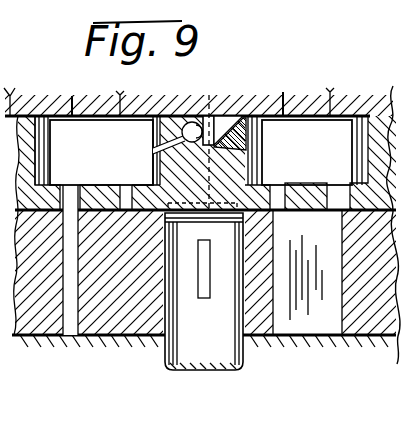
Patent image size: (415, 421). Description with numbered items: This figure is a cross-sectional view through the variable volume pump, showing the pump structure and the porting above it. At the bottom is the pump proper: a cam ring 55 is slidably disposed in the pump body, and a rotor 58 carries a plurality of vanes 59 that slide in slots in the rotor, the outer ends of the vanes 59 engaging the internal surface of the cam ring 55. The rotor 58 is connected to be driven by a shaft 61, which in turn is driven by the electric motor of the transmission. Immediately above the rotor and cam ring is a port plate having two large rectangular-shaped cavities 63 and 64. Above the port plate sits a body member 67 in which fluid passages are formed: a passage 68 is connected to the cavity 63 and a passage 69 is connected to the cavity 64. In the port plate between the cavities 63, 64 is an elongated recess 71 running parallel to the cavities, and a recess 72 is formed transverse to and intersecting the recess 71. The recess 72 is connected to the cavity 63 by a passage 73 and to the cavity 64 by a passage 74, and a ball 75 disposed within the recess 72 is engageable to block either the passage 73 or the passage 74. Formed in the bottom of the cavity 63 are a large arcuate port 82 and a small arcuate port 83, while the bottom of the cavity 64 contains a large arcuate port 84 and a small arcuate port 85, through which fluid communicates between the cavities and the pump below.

The cam ring 55 is at (37, 337).
The rotor 58 is at (127, 337).
The vanes 59 is at (327, 322).
The shaft 61 is at (192, 371).
The cavity 63 is at (92, 162).
The cavity 64 is at (350, 153).
The body member 67 is at (376, 100).
The passage 68 is at (73, 96).
The passage 69 is at (284, 92).
The elongated recess 71 is at (208, 116).
The recess 72 is at (228, 116).
The passage 73 is at (176, 141).
The passage 74 is at (290, 155).
The ball 75 is at (188, 122).
The large arcuate port 82 is at (75, 202).
The small arcuate port 83 is at (125, 212).
The large arcuate port 84 is at (351, 197).
The small arcuate port 85 is at (285, 196).